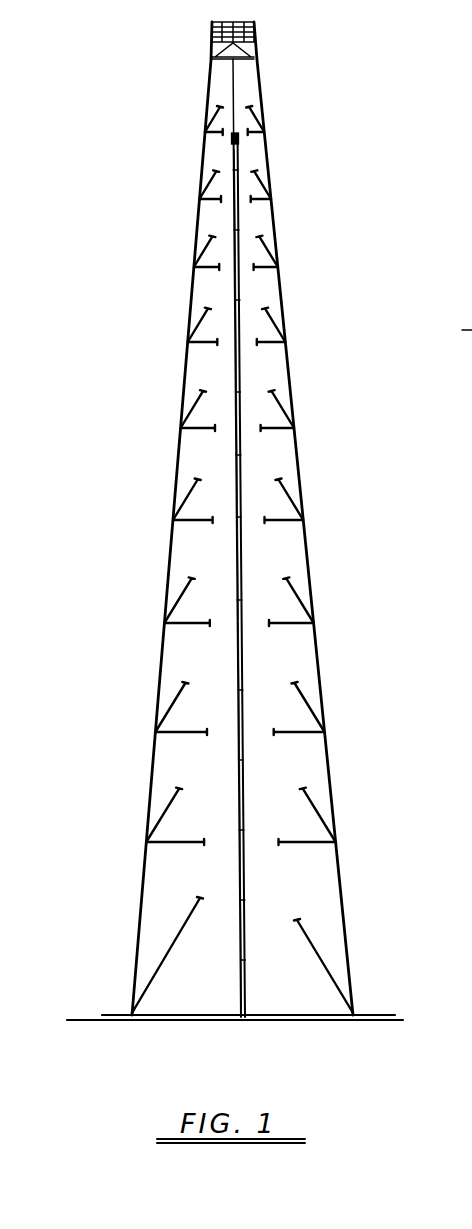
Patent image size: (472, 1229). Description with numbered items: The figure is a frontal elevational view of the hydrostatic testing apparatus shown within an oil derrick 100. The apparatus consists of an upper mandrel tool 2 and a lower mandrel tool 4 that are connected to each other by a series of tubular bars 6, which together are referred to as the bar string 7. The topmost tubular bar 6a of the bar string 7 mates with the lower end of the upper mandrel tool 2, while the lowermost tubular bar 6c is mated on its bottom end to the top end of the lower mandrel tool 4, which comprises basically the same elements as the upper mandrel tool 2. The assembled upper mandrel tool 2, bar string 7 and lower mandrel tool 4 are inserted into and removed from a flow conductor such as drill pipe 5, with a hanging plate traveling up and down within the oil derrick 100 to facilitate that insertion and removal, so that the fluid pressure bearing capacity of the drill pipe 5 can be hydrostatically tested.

The oil derrick 100 is at (145, 862).
The bar string 7 is at (235, 551).
The upper mandrel tool 2 is at (239, 158).
The topmost tubular bar 6a is at (239, 222).
The tubular bar 6 is at (239, 310).
The lowermost tubular bar 6c is at (243, 750).
The lower mandrel tool 4 is at (243, 800).
The drill pipe 5 is at (459, 333).